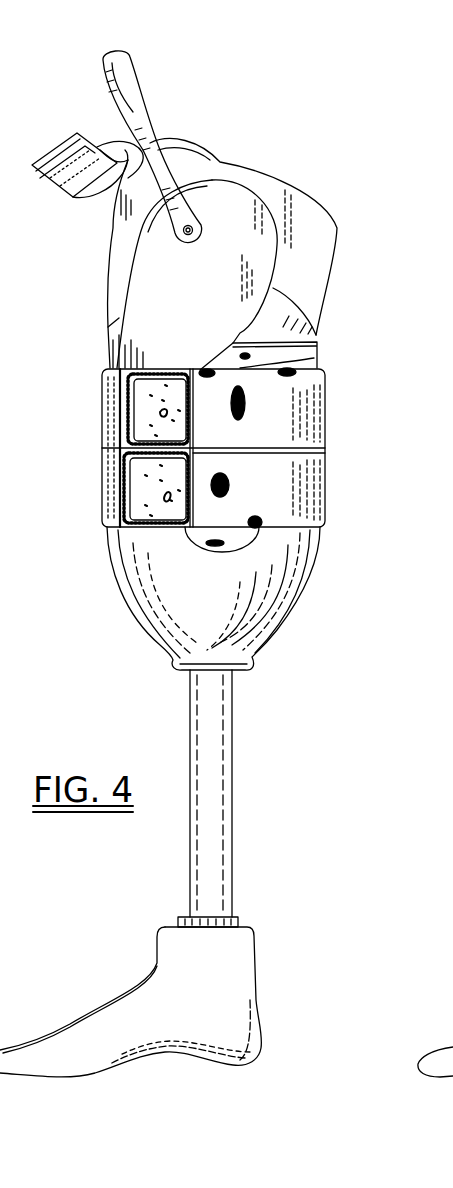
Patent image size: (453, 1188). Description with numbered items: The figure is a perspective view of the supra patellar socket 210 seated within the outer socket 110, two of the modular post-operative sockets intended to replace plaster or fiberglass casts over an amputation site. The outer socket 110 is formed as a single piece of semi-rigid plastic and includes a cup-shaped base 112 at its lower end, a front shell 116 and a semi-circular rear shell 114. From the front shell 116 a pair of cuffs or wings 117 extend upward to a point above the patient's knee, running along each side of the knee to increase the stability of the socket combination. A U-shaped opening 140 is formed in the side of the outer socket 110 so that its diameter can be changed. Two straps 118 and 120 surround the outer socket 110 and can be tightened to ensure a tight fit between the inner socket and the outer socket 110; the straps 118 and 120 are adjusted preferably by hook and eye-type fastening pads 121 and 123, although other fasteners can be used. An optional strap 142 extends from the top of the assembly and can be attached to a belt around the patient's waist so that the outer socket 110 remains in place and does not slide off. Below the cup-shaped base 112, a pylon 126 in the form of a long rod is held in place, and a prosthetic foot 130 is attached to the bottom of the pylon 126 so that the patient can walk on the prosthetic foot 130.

The outer socket 110 is at (213, 582).
The cup-shaped base 112 is at (295, 617).
The semi-circular rear shell 114 is at (316, 347).
The front shell 116 is at (110, 587).
The cuffs or wings 117 is at (268, 278).
The strap 118 is at (325, 410).
The strap 120 is at (102, 497).
The hook and eye-type fastening pad 121 is at (137, 402).
The hook and eye-type fastening pad 123 is at (143, 480).
The pylon 126 is at (230, 720).
The prosthetic foot 130 is at (243, 963).
The U-shaped opening 140 is at (243, 537).
The strap 142 is at (102, 78).
The supra patellar socket 210 is at (332, 179).